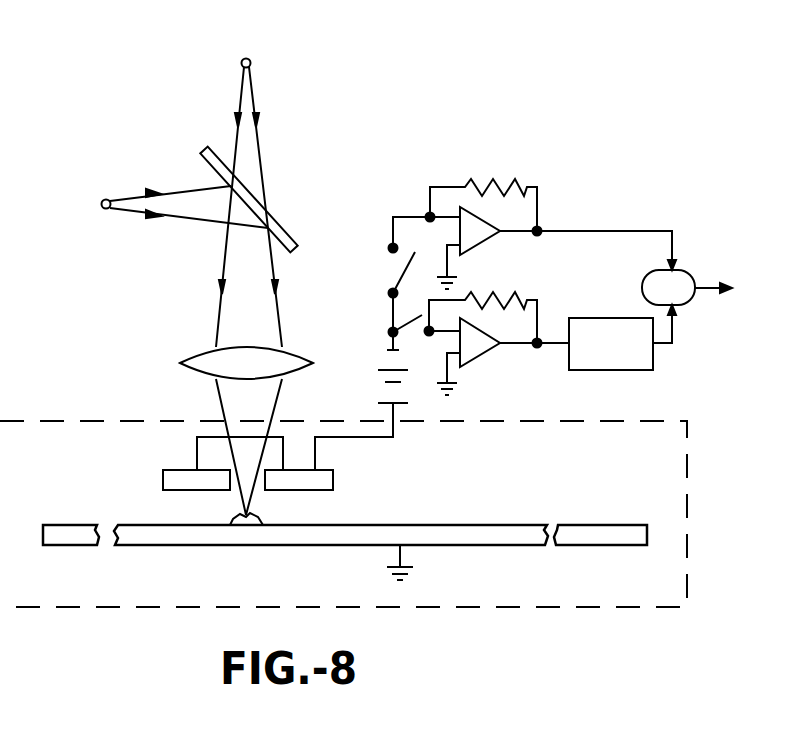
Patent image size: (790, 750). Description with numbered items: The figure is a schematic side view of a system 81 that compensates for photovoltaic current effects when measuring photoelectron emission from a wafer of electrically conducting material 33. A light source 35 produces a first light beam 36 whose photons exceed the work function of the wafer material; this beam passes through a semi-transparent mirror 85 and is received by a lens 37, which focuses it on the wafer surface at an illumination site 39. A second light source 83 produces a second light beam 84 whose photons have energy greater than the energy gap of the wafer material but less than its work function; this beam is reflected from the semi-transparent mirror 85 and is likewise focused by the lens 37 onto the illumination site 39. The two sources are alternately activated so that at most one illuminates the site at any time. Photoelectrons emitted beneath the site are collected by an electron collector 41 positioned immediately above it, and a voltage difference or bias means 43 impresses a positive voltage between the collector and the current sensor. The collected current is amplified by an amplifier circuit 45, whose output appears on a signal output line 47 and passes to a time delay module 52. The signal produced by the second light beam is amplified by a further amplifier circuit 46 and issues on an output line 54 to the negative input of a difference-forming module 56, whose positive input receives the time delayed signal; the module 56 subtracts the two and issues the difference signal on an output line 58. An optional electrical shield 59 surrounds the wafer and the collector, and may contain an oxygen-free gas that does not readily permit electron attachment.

The wafer of electrically conducting material 33 is at (502, 537).
The light source 35 is at (250, 59).
The first light beam 36 is at (253, 147).
The lens 37 is at (271, 365).
The illumination site 39 is at (233, 522).
The electron collector 41 is at (180, 483).
The voltage difference or bias means 43 is at (383, 368).
The amplifier circuit 45 is at (555, 288).
The amplifier circuit 46 is at (526, 158).
The signal output line 47 is at (555, 347).
The time delay module 52 is at (627, 366).
The output line 54 is at (613, 229).
The difference-forming module 56 is at (682, 272).
The output line 58 is at (696, 298).
The electrical shield 59 is at (578, 610).
The system 81 is at (404, 162).
The second light source 83 is at (101, 206).
The second light beam 84 is at (187, 211).
The semi-transparent mirror 85 is at (288, 226).